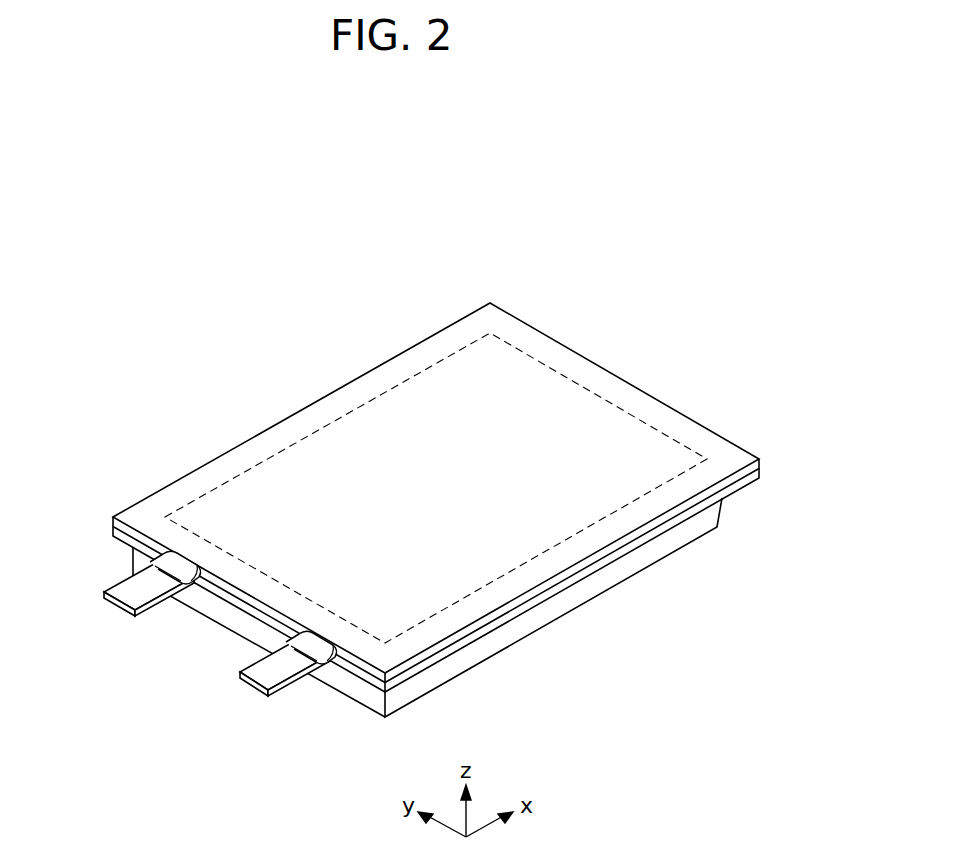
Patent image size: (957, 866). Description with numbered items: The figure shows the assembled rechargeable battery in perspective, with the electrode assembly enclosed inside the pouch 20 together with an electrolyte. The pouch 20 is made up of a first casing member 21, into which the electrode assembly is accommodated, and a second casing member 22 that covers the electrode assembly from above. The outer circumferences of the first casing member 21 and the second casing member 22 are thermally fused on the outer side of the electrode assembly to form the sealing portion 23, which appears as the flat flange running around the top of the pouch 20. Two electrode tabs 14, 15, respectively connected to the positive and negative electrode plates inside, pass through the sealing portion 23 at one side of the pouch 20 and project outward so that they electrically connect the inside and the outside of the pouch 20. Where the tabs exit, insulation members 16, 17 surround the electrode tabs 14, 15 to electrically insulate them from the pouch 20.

The electrode tab 14 is at (267, 675).
The electrode tab 15 is at (123, 588).
The insulation member 16 is at (306, 652).
The insulation member 17 is at (178, 565).
The pouch 20 is at (436, 511).
The first casing member 21 is at (532, 603).
The second casing member 22 is at (555, 580).
The sealing portion 23 is at (368, 392).